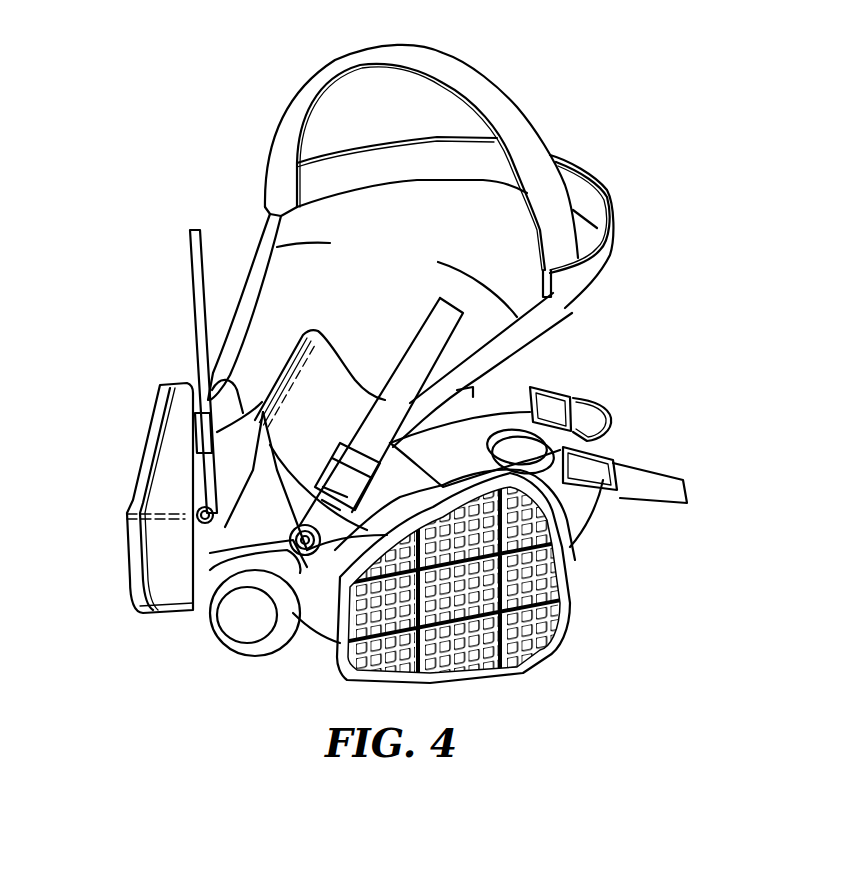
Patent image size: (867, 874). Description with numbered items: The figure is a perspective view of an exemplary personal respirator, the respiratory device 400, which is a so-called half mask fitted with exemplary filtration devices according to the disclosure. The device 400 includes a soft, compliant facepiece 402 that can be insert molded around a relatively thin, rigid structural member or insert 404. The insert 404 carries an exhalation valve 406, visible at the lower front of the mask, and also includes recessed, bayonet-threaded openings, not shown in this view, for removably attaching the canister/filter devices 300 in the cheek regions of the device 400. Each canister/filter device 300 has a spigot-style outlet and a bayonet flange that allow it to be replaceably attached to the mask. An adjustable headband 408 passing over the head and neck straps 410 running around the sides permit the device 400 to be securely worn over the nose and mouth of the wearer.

The respiratory device 400 is at (585, 114).
The facepiece 402 is at (343, 380).
The insert 404 is at (237, 523).
The exhalation valve 406 is at (257, 650).
The adjustable headband 408 is at (330, 243).
The neck straps 410 is at (497, 388).
The canister/filter device 300 is at (583, 619).